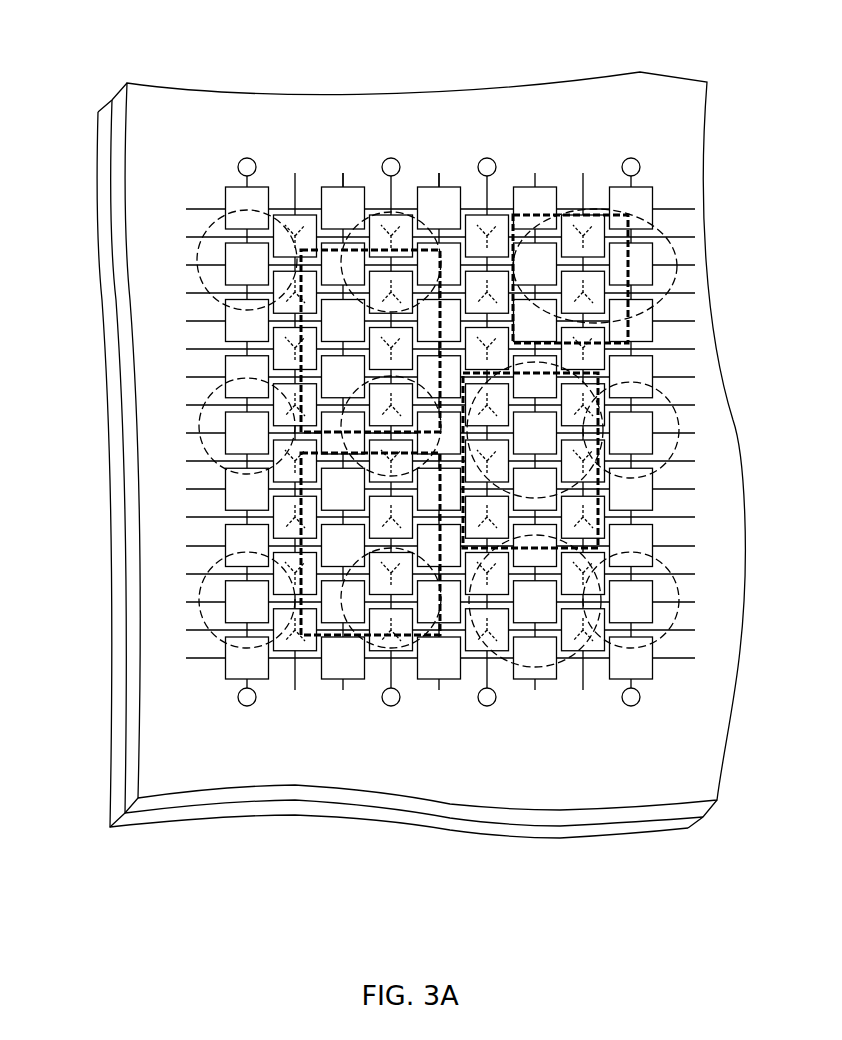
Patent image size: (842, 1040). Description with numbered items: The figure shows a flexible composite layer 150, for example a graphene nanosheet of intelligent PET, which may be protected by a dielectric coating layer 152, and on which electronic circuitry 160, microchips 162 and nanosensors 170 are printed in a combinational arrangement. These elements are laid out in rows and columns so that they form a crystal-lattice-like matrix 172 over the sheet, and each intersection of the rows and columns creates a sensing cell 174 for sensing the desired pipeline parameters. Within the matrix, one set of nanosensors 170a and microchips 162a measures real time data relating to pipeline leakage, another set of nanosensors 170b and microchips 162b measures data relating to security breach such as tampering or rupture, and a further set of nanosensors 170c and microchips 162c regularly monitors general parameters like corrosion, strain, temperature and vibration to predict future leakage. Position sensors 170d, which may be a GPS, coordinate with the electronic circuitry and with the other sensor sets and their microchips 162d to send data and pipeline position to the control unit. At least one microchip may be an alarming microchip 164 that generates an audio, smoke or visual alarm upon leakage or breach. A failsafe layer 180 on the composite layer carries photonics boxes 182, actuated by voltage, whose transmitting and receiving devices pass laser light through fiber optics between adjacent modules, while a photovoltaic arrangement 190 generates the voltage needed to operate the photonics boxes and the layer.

The flexible composite layer 150 is at (653, 64).
The dielectric coating layer 152 is at (197, 803).
The electronic circuitry 160 is at (672, 225).
The microchips 162 is at (628, 212).
The alarming microchip 164 is at (663, 672).
The nanosensors 170 is at (680, 484).
The matrix 172 is at (268, 458).
The sensing cell 174 is at (223, 280).
The failsafe layer 180 is at (590, 695).
The photonics boxes 182 is at (249, 157).
The photovoltaic arrangement 190 is at (354, 192).
The set of nanosensors 170a is at (388, 548).
The set of nanosensors 170b is at (553, 463).
The set of nanosensors 170c is at (388, 343).
The position sensors 170d is at (598, 263).
The microchips 162a is at (388, 613).
The microchips 162b is at (553, 528).
The microchips 162c is at (388, 413).
The sensing element 162d is at (598, 328).